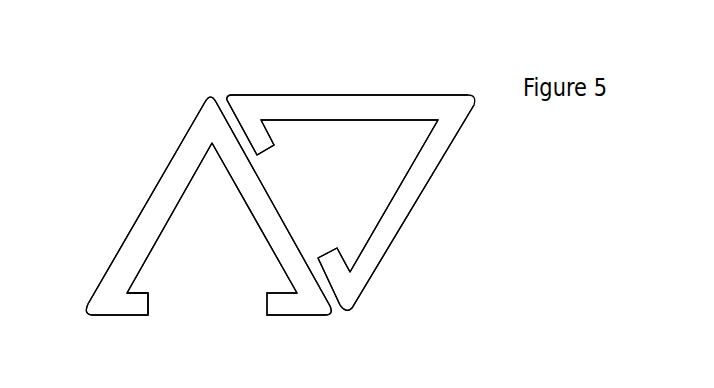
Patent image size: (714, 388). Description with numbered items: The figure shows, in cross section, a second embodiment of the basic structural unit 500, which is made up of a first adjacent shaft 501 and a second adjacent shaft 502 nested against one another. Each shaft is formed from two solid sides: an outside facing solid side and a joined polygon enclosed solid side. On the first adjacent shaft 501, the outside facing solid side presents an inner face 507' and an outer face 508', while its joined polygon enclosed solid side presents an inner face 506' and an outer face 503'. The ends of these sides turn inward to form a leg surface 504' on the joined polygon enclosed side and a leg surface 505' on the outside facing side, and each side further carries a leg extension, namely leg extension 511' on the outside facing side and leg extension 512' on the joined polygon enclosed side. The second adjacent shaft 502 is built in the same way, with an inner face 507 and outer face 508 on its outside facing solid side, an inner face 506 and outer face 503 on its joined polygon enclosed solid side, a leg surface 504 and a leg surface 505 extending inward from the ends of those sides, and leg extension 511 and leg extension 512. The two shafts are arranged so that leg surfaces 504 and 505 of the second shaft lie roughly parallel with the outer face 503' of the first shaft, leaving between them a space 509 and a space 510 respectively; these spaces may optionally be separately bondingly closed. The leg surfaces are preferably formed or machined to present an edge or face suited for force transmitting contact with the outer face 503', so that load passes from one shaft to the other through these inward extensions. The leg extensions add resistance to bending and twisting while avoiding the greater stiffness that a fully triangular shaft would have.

The basic structural unit 500 is at (543, 193).
The first adjacent shaft 501 is at (162, 140).
The second adjacent shaft 502 is at (400, 87).
The outer face of a joined polygon enclosed solid side 503 is at (427, 206).
The outer face of a joined polygon enclosed solid side 503' is at (284, 204).
The leg surface of a joined polygon enclosed solid side 504 is at (386, 286).
The leg surface of a joined polygon enclosed solid side 504' is at (304, 340).
The leg surface of an outside facing solid side 505 is at (256, 108).
The leg surface of an outside facing solid side 505' is at (117, 331).
The inner face of a joined polygon enclosed solid side 506 is at (394, 196).
The inner face of a joined polygon enclosed solid side 506' is at (254, 218).
The inner face of an outside facing solid side 507 is at (349, 141).
The inner face of an outside facing solid side 507' is at (169, 218).
The outer face of an outside facing solid side 508 is at (350, 75).
The outer face of an outside facing solid side 508' is at (138, 203).
The space 509 is at (340, 314).
The space 510 is at (220, 96).
The leg extension of an outside facing solid side 511 is at (289, 88).
The leg extension of an outside facing solid side 511' is at (94, 285).
The leg extension of a joined polygon enclosed solid side 512 is at (405, 262).
The leg extension of a joined polygon enclosed solid side 512' is at (252, 331).